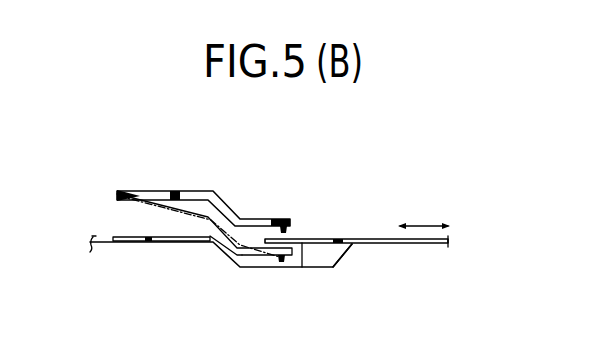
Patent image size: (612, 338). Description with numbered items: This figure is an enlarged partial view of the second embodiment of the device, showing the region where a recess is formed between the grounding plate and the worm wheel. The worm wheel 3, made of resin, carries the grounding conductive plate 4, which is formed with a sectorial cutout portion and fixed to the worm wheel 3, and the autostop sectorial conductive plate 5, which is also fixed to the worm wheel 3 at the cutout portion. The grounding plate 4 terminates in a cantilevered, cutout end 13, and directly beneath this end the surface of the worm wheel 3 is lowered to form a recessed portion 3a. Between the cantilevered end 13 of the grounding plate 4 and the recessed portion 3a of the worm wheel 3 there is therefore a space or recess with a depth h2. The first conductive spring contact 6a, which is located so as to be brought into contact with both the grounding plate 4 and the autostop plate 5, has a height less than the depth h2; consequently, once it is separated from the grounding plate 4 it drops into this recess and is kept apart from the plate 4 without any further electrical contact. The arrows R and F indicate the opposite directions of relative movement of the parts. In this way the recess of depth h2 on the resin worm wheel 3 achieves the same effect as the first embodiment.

The worm wheel 3 is at (103, 243).
The recessed portion 3a is at (338, 256).
The grounding conductive plate 4 is at (347, 237).
The autostop sectorial conductive plate 5 is at (118, 237).
The first conductive spring contact 6a is at (269, 220).
The cantilevered end 13 is at (262, 228).
The depth h2 is at (305, 250).
The rearward direction R is at (413, 225).
The forward direction F is at (456, 225).